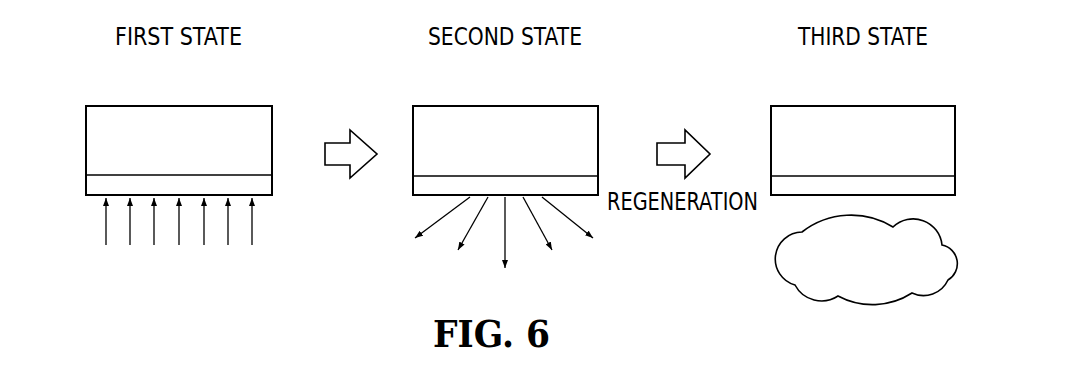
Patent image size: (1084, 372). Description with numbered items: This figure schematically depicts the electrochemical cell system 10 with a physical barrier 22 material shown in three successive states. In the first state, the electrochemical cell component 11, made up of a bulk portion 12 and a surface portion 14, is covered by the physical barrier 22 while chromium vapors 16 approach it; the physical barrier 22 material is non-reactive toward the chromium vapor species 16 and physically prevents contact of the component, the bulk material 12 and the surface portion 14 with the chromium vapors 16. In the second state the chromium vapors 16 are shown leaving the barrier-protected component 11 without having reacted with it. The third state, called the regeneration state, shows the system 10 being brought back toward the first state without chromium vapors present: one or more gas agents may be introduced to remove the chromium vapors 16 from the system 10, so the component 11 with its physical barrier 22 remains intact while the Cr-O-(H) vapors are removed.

The electrochemical cell system 10 is at (185, 103).
The electrochemical cell component 11 is at (565, 110).
The bulk portion 12 is at (222, 113).
The surface portion 14 is at (128, 175).
The chromium vapors 16 is at (430, 220).
The physical barrier 22 is at (412, 189).